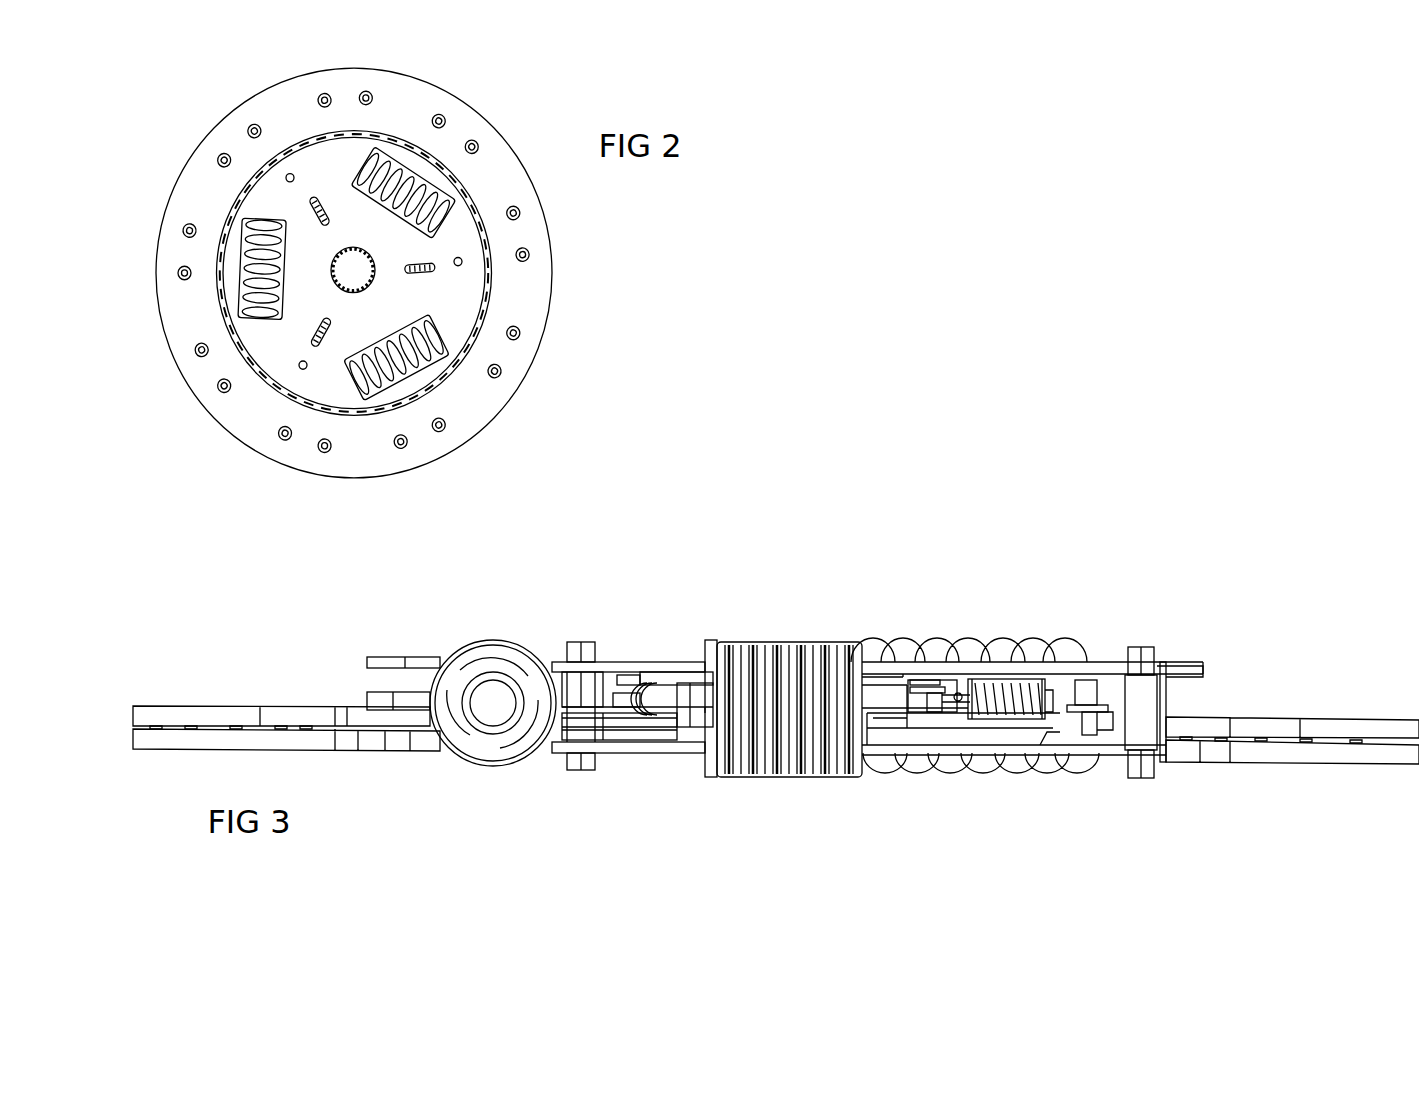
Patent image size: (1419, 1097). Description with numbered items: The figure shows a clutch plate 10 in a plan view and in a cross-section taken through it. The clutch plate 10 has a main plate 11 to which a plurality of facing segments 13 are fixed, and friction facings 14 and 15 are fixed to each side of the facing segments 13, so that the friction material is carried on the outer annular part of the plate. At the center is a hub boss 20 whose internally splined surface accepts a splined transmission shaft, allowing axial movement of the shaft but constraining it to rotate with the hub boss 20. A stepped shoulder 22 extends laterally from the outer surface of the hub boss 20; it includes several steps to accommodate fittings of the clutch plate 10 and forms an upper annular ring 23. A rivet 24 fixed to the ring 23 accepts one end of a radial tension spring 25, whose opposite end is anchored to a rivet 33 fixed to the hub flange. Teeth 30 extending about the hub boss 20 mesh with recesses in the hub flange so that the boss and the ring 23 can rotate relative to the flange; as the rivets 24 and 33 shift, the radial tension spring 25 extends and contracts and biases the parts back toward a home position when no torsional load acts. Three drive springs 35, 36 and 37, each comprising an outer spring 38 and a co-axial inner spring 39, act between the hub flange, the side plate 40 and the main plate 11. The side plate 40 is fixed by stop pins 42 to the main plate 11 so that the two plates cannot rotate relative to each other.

In FIG. 2, the clutch plate 10 is at (606, 229).
In FIG. 3, the clutch plate 10 is at (908, 518).
In FIG. 3, the main plate 11 is at (606, 748).
In FIG. 3, the facing segments 13 is at (274, 725).
In FIG. 2, the friction facing 14 is at (430, 448).
In FIG. 3, the friction facing 14 is at (1273, 725).
In FIG. 3, the friction facing 15 is at (1350, 755).
In FIG. 3, the hub boss 20 is at (815, 640).
In FIG. 3, the stepped shoulder 22 is at (678, 690).
In FIG. 3, the upper annular ring 23 is at (628, 672).
In FIG. 3, the rivet 24 is at (929, 712).
In FIG. 2, the radial tension spring 25 is at (316, 213).
In FIG. 3, the radial tension spring 25 is at (984, 664).
In FIG. 3, the teeth 30 is at (710, 760).
In FIG. 3, the rivet 33 is at (1088, 715).
In FIG. 2, the drive spring 35 is at (427, 180).
In FIG. 3, the drive spring 35 is at (445, 628).
In FIG. 2, the drive spring 36 is at (234, 288).
In FIG. 2, the drive spring 37 is at (432, 370).
In FIG. 3, the drive spring 37 is at (1043, 615).
In FIG. 3, the outer spring 38 is at (462, 745).
In FIG. 3, the inner spring 39 is at (505, 668).
In FIG. 2, the side plate 40 is at (452, 324).
In FIG. 3, the side plate 40 is at (1187, 670).
In FIG. 2, the stop pins 42 is at (290, 173).
In FIG. 3, the stop pins 42 is at (573, 760).